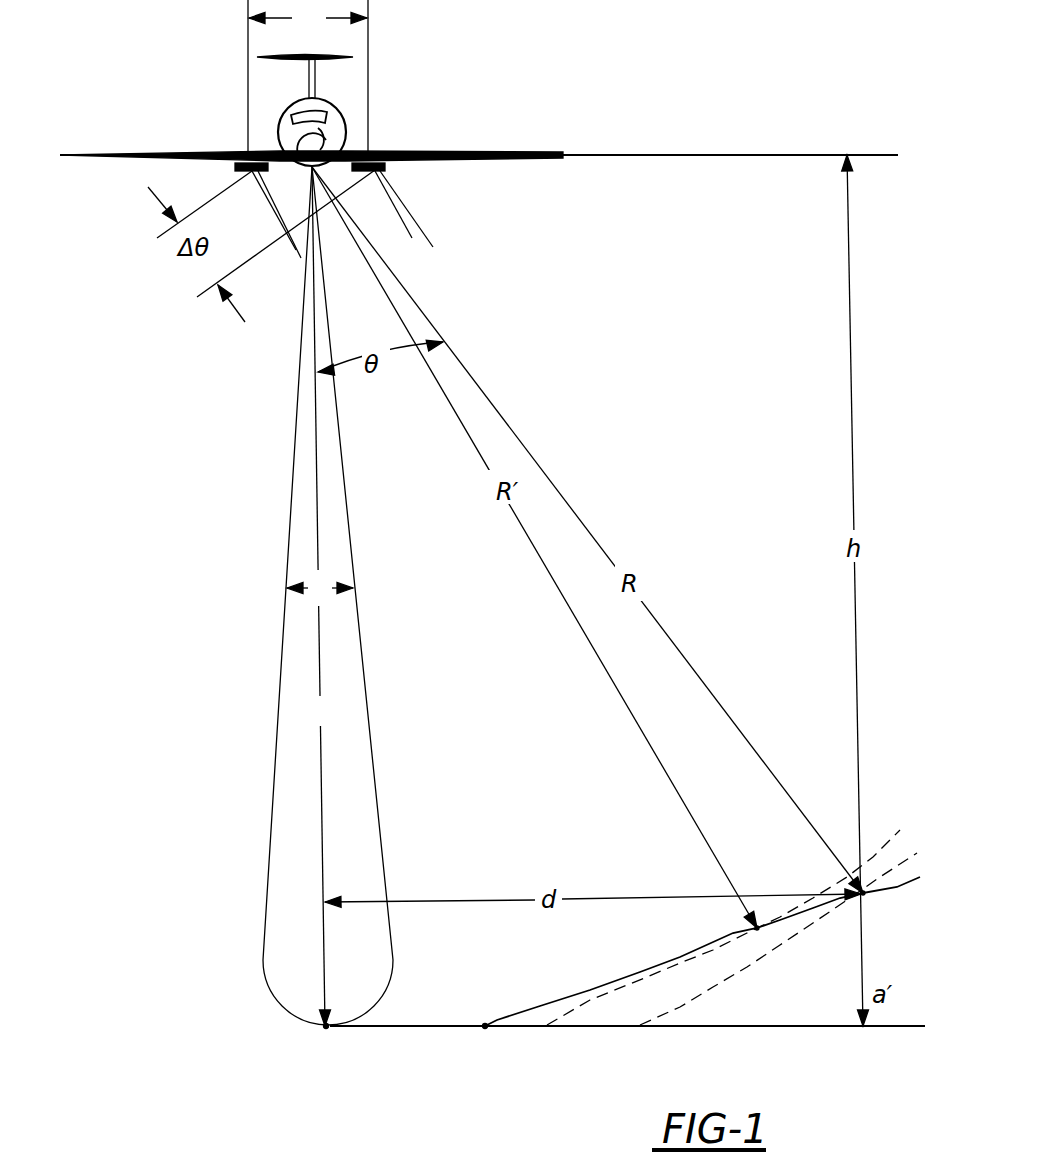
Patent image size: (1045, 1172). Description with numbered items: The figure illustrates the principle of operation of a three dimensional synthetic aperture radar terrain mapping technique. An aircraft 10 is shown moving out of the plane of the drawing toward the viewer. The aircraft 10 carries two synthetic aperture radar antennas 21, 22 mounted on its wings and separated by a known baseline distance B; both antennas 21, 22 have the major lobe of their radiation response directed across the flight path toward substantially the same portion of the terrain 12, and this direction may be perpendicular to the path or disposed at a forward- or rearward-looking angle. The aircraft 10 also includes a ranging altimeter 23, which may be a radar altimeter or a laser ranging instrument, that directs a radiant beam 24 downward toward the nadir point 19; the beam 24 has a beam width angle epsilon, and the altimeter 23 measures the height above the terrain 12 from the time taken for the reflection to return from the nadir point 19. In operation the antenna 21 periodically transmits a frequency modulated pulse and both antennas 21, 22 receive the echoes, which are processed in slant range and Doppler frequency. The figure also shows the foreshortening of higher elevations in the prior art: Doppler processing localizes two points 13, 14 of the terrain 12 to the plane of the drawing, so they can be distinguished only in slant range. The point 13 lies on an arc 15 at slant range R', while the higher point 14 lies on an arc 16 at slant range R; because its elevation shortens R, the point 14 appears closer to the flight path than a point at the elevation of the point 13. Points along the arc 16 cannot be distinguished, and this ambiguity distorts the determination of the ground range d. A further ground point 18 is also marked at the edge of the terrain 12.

The aircraft 10 is at (400, 112).
The terrain 12 is at (601, 987).
The point 13 is at (760, 930).
The point 14 is at (866, 895).
The arc 15 is at (684, 976).
The arc 16 is at (748, 976).
The ground reference point 18 is at (485, 1028).
The nadir point 19 is at (327, 1028).
The synthetic aperture radar antenna 21 is at (385, 168).
The synthetic aperture radar antenna 22 is at (235, 168).
The ranging altimeter 23 is at (330, 170).
The radiant beam 24 is at (278, 766).